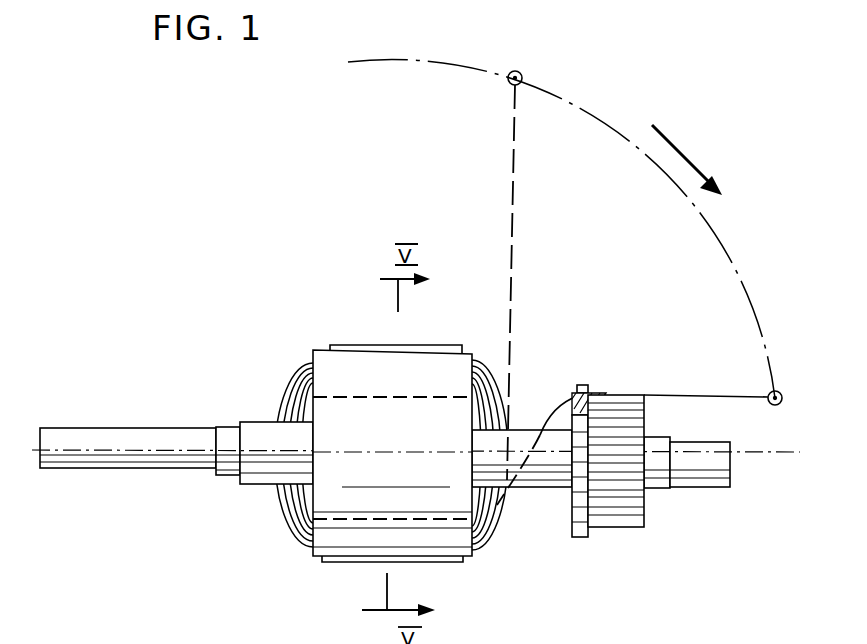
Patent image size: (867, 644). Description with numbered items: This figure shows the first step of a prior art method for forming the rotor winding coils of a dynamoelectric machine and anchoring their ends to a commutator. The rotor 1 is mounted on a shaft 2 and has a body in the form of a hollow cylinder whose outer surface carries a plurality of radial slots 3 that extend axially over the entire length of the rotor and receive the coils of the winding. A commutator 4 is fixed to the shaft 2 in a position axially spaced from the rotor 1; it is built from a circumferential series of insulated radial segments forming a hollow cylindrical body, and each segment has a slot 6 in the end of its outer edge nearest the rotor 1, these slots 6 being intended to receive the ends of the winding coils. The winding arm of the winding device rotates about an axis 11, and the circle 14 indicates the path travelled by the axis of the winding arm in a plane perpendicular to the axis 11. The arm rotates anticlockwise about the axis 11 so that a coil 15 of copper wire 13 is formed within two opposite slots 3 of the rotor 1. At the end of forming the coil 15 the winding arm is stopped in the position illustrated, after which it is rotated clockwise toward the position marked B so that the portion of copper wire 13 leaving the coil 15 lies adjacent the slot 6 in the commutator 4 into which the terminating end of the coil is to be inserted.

The rotor 1 is at (338, 318).
The shaft 2 is at (135, 430).
The radial slots 3 is at (356, 516).
The commutator 4 is at (627, 420).
The slot 6 is at (578, 385).
The axis 11 is at (392, 458).
The copper wire 13 is at (511, 176).
The circle 14 is at (426, 61).
The coil 15 is at (296, 398).